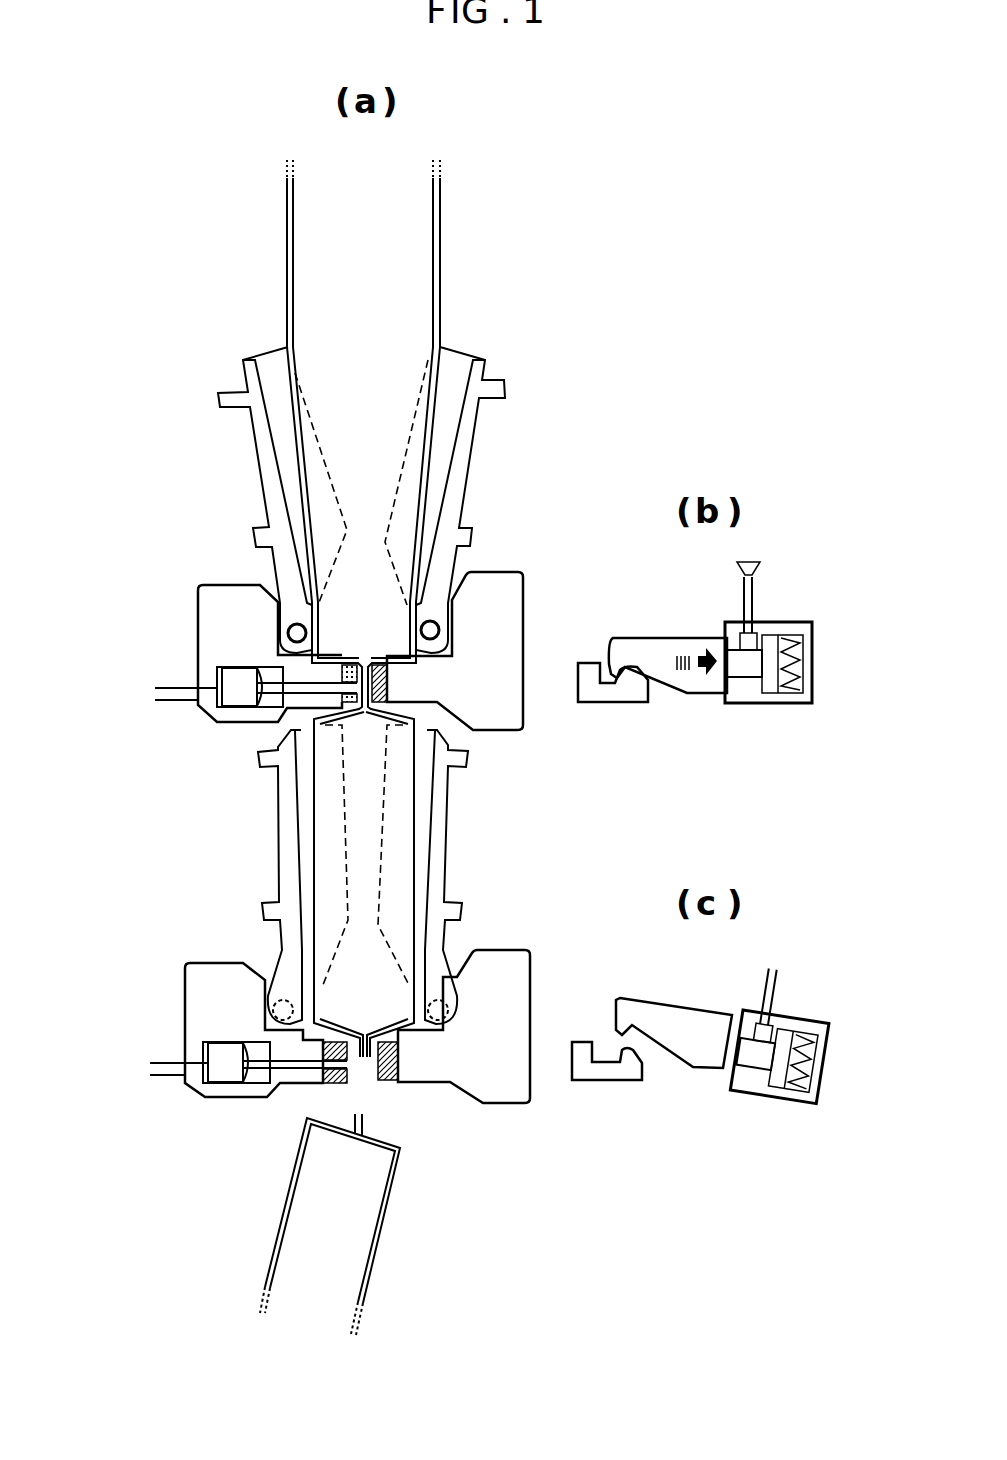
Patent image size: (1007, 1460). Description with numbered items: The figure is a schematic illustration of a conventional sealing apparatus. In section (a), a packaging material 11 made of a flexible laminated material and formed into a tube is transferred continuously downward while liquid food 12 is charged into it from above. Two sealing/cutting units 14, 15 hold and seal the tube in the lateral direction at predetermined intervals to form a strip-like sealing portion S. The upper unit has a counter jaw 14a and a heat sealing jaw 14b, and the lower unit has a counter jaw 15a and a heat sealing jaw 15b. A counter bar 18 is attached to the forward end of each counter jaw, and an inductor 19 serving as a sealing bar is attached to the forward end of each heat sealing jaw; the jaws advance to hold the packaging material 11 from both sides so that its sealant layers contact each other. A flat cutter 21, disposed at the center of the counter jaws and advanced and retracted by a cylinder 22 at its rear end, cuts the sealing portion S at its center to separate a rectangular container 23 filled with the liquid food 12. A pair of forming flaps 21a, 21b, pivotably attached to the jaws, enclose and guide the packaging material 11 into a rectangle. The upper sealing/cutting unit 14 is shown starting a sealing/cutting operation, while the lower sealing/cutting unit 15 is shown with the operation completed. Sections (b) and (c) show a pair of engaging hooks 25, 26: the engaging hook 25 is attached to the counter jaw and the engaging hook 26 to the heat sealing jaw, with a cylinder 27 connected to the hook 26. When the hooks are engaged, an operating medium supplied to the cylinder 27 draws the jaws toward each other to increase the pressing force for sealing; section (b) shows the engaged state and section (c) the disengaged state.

The packaging material 11 is at (440, 205).
The liquid food 12 is at (410, 287).
The sealing/cutting unit 14 is at (532, 556).
The counter jaw 14a is at (198, 590).
The heat sealing jaw 14b is at (528, 588).
The sealing/cutting unit 15 is at (541, 928).
The counter jaw 15a is at (185, 960).
The heat sealing jaw 15b is at (532, 968).
The counter bar 18 is at (352, 662).
The inductor 19 is at (392, 682).
The cutter 21 is at (307, 688).
The forming flap 21a is at (240, 362).
The forming flap 21b is at (488, 373).
The cylinder 22 is at (240, 667).
The rectangular container 23 is at (392, 1208).
The engaging hook 25 is at (638, 702).
The engaging hook 26 is at (703, 683).
The cylinder 27 is at (812, 677).
The sealing portion S is at (366, 648).